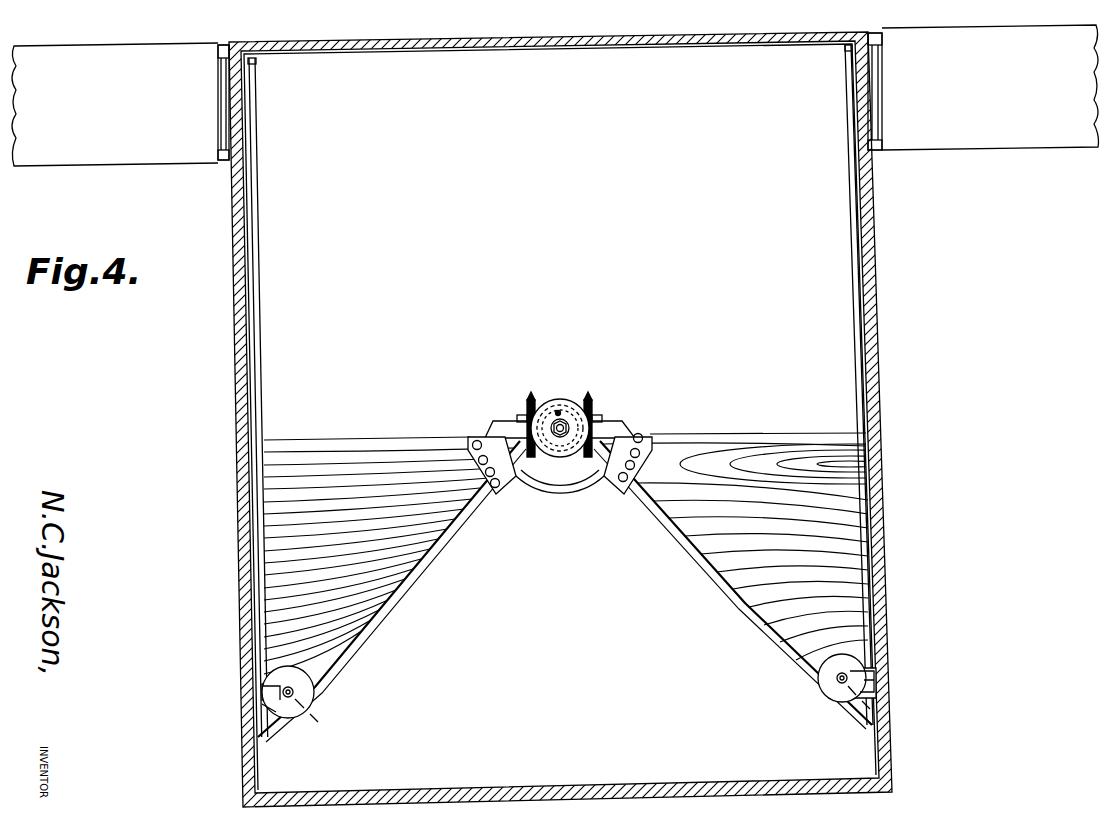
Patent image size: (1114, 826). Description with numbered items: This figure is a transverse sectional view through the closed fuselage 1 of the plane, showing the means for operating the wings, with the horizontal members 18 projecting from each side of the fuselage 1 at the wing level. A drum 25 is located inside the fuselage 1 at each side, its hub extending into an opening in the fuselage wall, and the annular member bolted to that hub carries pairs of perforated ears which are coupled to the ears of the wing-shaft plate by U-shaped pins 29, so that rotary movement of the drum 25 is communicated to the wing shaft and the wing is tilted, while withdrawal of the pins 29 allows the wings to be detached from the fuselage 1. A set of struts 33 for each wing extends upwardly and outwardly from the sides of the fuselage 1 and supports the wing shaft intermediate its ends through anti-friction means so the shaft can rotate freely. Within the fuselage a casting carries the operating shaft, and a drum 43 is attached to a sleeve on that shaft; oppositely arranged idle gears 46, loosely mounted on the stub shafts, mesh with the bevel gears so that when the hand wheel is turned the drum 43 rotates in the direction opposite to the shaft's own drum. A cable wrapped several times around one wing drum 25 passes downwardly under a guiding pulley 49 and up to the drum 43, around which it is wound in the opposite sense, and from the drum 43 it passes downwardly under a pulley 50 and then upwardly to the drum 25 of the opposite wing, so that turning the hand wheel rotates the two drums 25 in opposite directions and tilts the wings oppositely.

The fuselage 1 is at (877, 298).
The supporting beam 18 is at (180, 143).
The drum 25 is at (257, 133).
The pin 29 is at (220, 90).
The struts 33 is at (564, 440).
The drum 43 is at (561, 411).
The idle gears 46 is at (532, 406).
The guiding pulley 49 is at (312, 706).
The pulley 50 is at (830, 696).